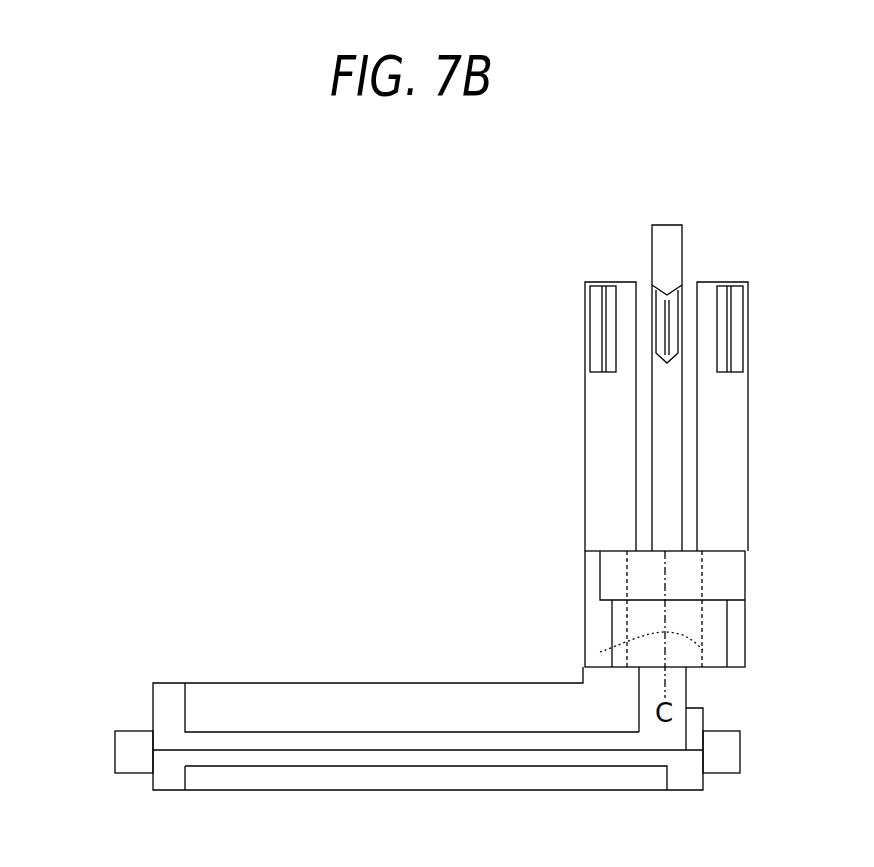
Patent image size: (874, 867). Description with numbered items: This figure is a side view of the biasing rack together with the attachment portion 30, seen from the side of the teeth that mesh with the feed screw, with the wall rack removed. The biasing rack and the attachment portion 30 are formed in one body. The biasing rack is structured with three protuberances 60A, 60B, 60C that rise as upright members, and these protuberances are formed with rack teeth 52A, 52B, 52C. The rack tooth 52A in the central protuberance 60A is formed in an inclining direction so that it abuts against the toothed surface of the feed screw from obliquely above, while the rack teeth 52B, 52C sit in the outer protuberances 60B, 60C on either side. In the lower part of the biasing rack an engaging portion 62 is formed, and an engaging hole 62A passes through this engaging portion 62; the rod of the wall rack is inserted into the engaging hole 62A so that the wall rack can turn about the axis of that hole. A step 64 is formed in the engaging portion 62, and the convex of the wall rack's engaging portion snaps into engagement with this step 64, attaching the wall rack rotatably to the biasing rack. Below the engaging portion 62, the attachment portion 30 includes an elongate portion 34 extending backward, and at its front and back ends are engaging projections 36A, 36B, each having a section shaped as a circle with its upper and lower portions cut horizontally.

The attachment portion 30 is at (350, 647).
The elongate portion 34 is at (392, 762).
The engaging projection 36A is at (728, 753).
The engaging projection 36B is at (127, 757).
The rack tooth 52A is at (660, 292).
The rack tooth 52B is at (600, 326).
The rack tooth 52C is at (730, 330).
The central protuberance 60A is at (666, 240).
The protuberance 60B is at (595, 405).
The protuberance 60C is at (728, 408).
The engaging portion 62 is at (600, 535).
The engaging hole 62A is at (600, 652).
The step 64 is at (603, 600).